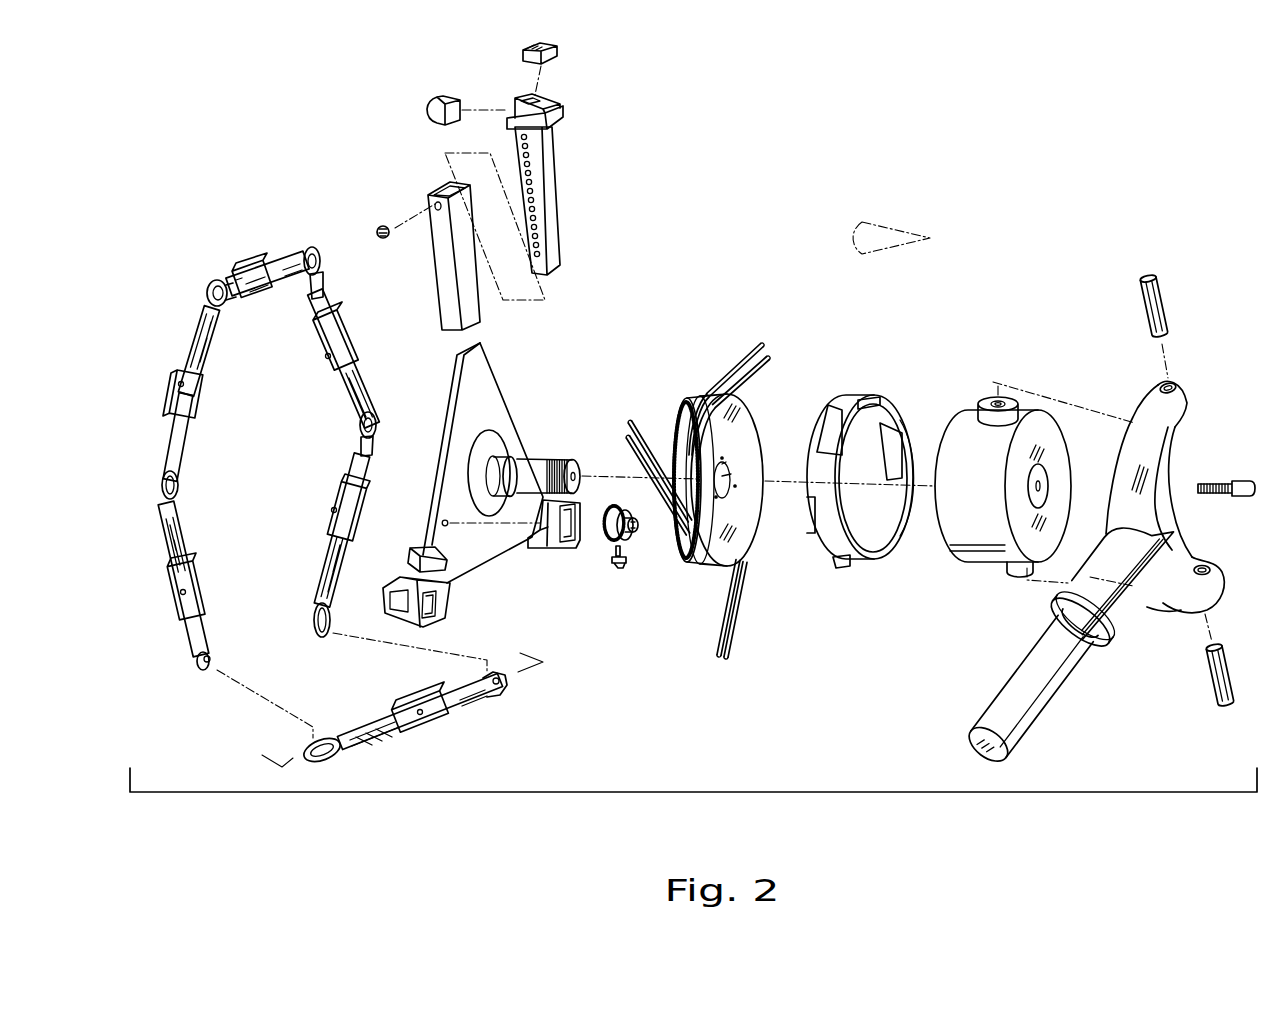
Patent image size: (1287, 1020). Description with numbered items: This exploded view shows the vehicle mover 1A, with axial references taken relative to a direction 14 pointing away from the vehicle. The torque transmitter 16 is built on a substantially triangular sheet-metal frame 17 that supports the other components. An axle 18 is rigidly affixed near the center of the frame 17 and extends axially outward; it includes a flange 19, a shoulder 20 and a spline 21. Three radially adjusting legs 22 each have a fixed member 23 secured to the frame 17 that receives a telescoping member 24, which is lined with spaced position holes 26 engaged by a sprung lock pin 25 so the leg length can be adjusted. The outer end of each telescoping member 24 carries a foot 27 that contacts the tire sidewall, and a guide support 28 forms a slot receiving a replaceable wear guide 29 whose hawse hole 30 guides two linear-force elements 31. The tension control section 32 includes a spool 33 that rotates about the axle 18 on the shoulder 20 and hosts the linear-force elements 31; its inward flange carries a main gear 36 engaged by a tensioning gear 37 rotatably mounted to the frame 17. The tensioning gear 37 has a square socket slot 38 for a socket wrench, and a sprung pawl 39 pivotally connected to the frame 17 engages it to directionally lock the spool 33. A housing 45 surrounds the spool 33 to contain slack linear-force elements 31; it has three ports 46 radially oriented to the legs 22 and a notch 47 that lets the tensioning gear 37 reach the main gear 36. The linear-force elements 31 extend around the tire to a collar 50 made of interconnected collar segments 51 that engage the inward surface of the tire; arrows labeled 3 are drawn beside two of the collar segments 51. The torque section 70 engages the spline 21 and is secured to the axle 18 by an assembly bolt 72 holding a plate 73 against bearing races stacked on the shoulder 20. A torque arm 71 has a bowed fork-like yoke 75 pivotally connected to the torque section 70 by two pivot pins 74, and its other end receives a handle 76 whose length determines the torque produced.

The vehicle mover 1A is at (705, 792).
The section line 3 is at (262, 755).
The direction 14 is at (855, 237).
The torque transmitter 16 is at (481, 490).
The frame 17 is at (475, 392).
The axle 18 is at (535, 467).
The flange 19 is at (493, 443).
The shoulder 20 is at (497, 468).
The spline 21 is at (562, 460).
The radially adjusting legs 22 is at (604, 212).
The fixed member 23 is at (448, 273).
The telescoping member 24 is at (583, 201).
The sprung lock pin 25 is at (395, 228).
The position holes 26 is at (540, 257).
The foot 27 is at (425, 110).
The guide support 28 is at (561, 115).
The wear guide 29 is at (553, 53).
The hawse hole 30 is at (531, 44).
The linear-force elements 31 is at (647, 438).
The tension control section 32 is at (728, 490).
The spool 33 is at (743, 520).
The main gear 36 is at (682, 402).
The tensioning gear 37 is at (604, 532).
The socket slot 38 is at (637, 533).
The sprung pawl 39 is at (616, 565).
The housing 45 is at (849, 451).
The ports 46 is at (888, 424).
The notch 47 is at (815, 517).
The collar 50 is at (262, 188).
The collar segments 51 is at (260, 322).
The torque section 70 is at (1000, 524).
The torque arm 71 is at (1017, 633).
The assembly bolt 72 is at (1228, 478).
The plate 73 is at (1050, 476).
The pivot pins 74 is at (1138, 302).
The yoke 75 is at (1162, 512).
The handle 76 is at (1043, 705).